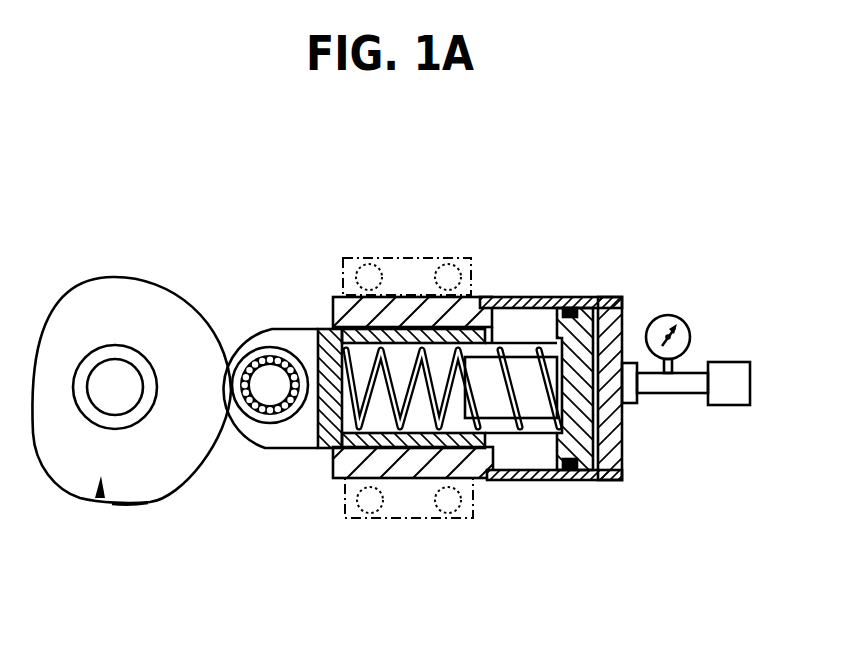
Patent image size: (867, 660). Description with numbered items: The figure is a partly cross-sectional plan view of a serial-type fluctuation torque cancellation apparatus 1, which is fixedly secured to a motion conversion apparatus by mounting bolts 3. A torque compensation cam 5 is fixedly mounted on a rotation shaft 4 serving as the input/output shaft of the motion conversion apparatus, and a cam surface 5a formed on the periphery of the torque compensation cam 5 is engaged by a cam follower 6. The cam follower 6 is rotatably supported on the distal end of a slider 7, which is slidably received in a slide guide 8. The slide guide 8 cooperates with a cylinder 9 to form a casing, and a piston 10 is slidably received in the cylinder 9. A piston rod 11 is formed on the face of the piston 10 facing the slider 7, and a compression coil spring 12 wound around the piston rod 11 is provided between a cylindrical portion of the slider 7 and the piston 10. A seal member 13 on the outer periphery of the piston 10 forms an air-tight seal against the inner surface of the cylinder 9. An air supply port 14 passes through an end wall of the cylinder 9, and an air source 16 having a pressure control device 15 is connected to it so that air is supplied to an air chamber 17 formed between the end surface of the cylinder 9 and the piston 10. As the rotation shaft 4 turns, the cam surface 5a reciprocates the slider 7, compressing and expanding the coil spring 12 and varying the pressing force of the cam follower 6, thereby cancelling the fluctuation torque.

The fluctuation torque cancellation apparatus 1 is at (441, 230).
The mounting bolts 3 is at (358, 500).
The rotation shaft 4 is at (102, 377).
The torque compensation cam 5 is at (98, 497).
The cam surface 5a is at (143, 503).
The cam follower 6 is at (255, 352).
The slider 7 is at (316, 425).
The slide guide 8 is at (413, 467).
The cylinder 9 is at (532, 300).
The piston 10 is at (600, 443).
The piston rod 11 is at (519, 368).
The compression coil spring 12 is at (520, 418).
The seal member 13 is at (568, 472).
The air supply port 14 is at (624, 312).
The pressure control device 15 is at (673, 320).
The air source 16 is at (732, 405).
The air chamber 17 is at (598, 411).